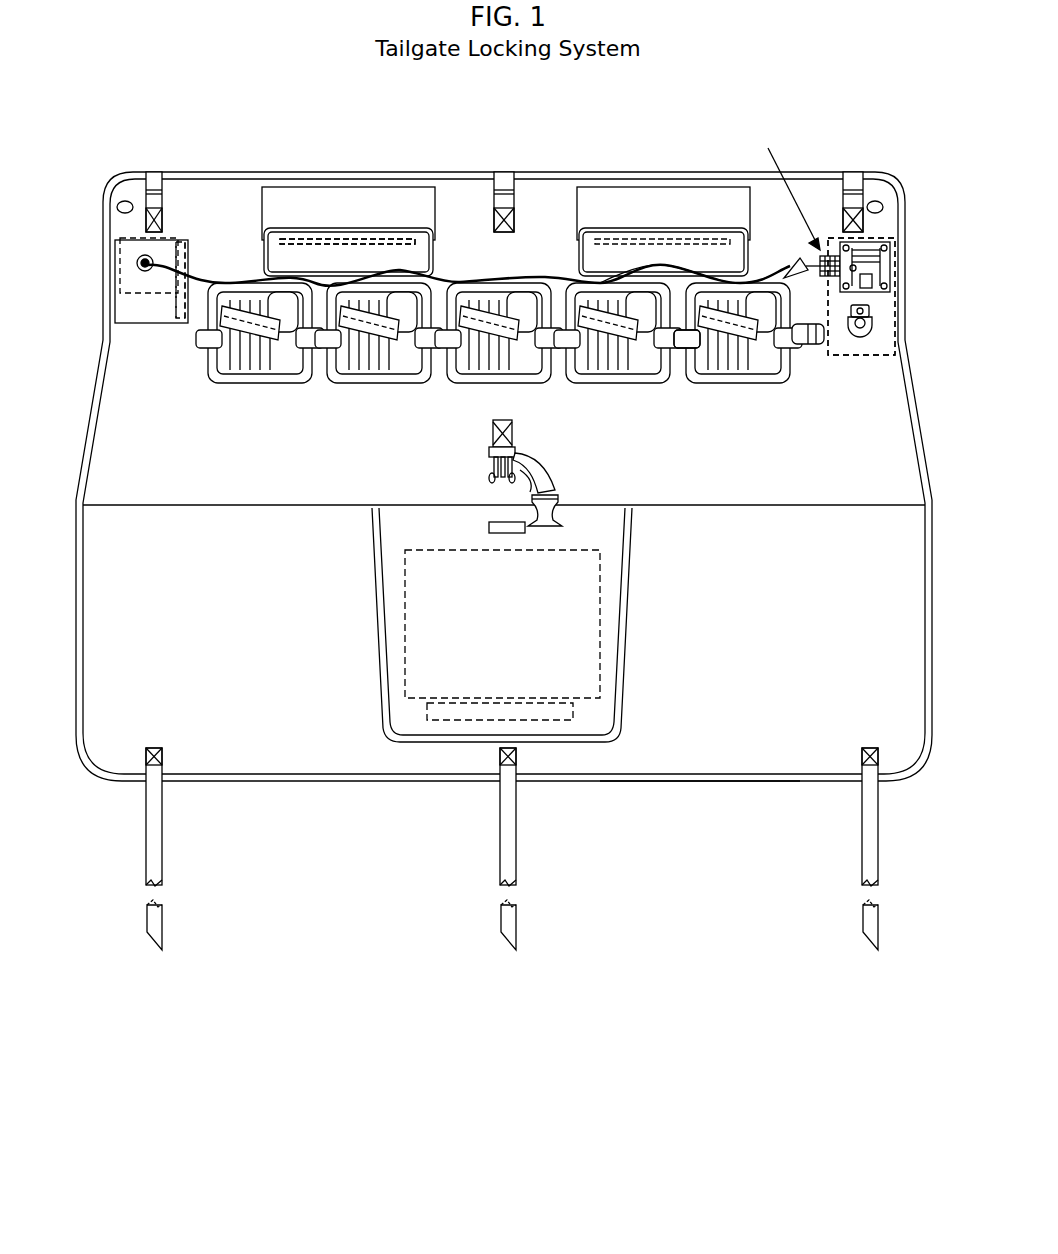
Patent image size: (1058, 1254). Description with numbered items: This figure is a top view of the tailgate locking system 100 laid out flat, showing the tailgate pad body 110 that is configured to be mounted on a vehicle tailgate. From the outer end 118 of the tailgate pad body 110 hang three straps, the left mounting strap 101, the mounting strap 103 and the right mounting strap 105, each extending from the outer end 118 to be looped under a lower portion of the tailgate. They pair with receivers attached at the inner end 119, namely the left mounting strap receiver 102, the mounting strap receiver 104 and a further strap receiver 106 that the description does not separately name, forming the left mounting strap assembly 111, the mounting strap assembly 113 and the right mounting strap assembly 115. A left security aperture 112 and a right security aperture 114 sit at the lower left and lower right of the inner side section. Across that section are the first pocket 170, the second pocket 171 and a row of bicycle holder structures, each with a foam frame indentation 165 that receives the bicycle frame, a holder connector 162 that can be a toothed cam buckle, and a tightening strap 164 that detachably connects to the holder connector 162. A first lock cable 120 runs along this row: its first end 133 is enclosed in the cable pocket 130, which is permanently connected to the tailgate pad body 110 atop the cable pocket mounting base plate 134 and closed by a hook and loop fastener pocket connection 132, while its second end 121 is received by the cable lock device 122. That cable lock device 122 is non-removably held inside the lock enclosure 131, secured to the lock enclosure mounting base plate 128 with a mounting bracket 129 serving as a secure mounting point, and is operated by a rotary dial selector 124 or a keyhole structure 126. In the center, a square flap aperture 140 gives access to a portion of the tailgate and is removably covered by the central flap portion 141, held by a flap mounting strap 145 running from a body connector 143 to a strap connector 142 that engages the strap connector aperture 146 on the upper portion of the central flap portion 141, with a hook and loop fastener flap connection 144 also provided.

The tailgate locking system 100 is at (111, 122).
The left mounting strap 101 is at (172, 855).
The left mounting strap receiver 102 is at (155, 170).
The mounting strap 103 is at (526, 855).
The mounting strap receiver 104 is at (504, 170).
The right mounting strap 105 is at (858, 870).
The third upper strap 106 is at (856, 170).
The tailgate pad body 110 is at (296, 160).
The left mounting strap assembly 111 is at (151, 980).
The left security aperture 112 is at (115, 205).
The mounting strap assembly 113 is at (505, 980).
The right security aperture 114 is at (885, 205).
The right mounting strap assembly 115 is at (866, 975).
The outer end 118 is at (695, 752).
The inner end 119 is at (460, 190).
The first lock cable 120 is at (505, 262).
The second end of the first lock cable 121 is at (788, 262).
The cable lock device 122 is at (776, 186).
The rotary dial selector 124 is at (832, 252).
The keyhole structure 126 is at (858, 268).
The lock enclosure mounting base plate 128 is at (872, 358).
The mounting bracket 129 is at (880, 325).
The cable pocket 130 is at (130, 335).
The lock enclosure 131 is at (900, 245).
The hook and loop fastener pocket connection 132 is at (182, 322).
The first end of the first lock cable 133 is at (138, 262).
The cable pocket mounting base plate 134 is at (172, 236).
The flap aperture 140 is at (605, 578).
The central flap portion 141 is at (628, 615).
The strap connector 142 is at (568, 512).
The body connector 143 is at (488, 478).
The hook and loop fastener flap connection 144 is at (578, 712).
The flap mounting strap 145 is at (560, 478).
The strap connector aperture 146 is at (487, 528).
The holder connector 162 is at (812, 350).
The tightening strap 164 is at (688, 350).
The frame indentation 165 is at (740, 378).
The first pocket 170 is at (438, 247).
The second pocket 171 is at (578, 200).